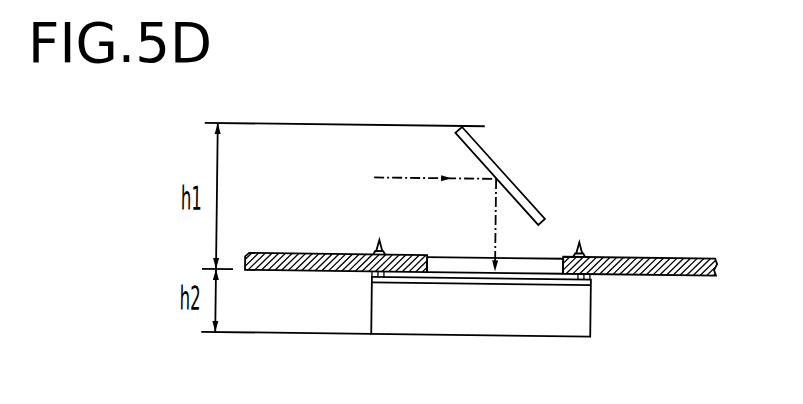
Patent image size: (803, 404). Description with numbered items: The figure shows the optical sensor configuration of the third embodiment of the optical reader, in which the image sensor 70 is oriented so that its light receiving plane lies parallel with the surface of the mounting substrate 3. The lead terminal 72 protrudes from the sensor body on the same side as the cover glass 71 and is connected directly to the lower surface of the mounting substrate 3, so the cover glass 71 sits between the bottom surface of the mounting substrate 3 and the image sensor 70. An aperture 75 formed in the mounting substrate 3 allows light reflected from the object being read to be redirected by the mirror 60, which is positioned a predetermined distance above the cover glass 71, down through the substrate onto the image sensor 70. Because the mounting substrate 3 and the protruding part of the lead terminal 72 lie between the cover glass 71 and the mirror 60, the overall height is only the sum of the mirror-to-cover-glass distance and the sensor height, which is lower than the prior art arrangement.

The mounting substrate 3 is at (672, 252).
The mirror 60 is at (495, 155).
The image sensor 70 is at (580, 313).
The cover glass 71 is at (440, 265).
The lead terminal 72 is at (583, 246).
The aperture 75 is at (556, 254).